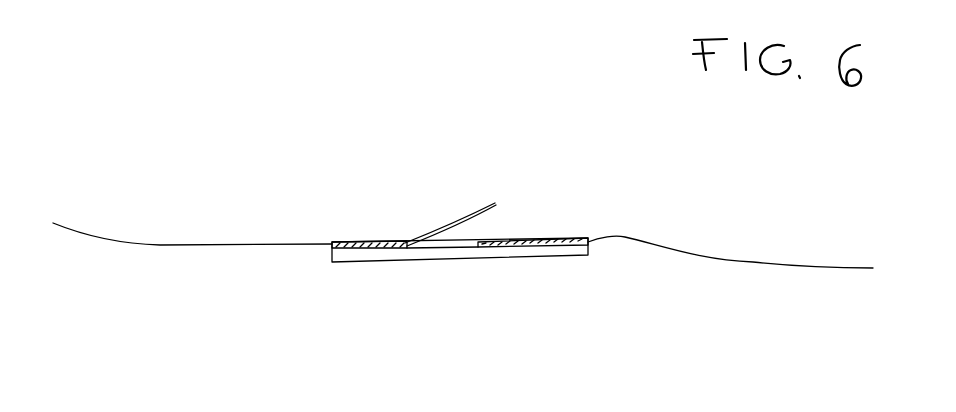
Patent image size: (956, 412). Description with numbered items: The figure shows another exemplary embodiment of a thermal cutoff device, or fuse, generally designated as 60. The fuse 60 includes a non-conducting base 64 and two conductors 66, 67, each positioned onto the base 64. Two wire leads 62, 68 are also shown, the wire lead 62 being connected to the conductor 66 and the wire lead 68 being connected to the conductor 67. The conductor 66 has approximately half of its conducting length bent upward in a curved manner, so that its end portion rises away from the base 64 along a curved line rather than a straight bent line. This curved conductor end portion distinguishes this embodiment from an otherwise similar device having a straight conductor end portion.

The thermal cutoff device 60 is at (318, 152).
The wire lead 62 is at (167, 245).
The non-conducting base 64 is at (370, 253).
The conductor 66 is at (403, 244).
The conductor 67 is at (547, 240).
The wire lead 68 is at (757, 260).